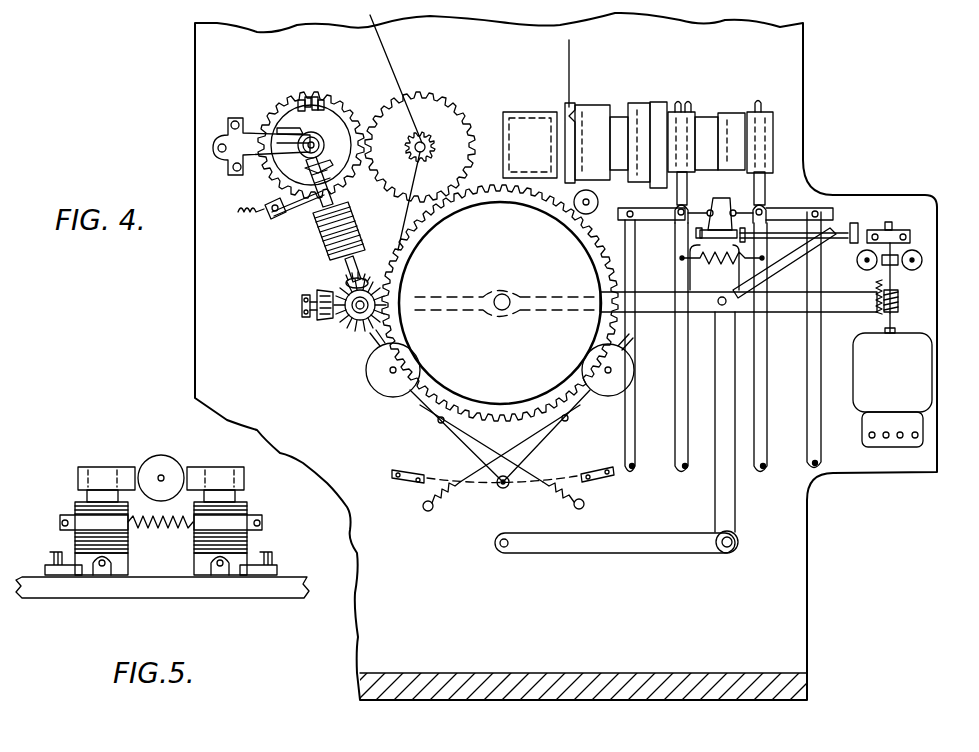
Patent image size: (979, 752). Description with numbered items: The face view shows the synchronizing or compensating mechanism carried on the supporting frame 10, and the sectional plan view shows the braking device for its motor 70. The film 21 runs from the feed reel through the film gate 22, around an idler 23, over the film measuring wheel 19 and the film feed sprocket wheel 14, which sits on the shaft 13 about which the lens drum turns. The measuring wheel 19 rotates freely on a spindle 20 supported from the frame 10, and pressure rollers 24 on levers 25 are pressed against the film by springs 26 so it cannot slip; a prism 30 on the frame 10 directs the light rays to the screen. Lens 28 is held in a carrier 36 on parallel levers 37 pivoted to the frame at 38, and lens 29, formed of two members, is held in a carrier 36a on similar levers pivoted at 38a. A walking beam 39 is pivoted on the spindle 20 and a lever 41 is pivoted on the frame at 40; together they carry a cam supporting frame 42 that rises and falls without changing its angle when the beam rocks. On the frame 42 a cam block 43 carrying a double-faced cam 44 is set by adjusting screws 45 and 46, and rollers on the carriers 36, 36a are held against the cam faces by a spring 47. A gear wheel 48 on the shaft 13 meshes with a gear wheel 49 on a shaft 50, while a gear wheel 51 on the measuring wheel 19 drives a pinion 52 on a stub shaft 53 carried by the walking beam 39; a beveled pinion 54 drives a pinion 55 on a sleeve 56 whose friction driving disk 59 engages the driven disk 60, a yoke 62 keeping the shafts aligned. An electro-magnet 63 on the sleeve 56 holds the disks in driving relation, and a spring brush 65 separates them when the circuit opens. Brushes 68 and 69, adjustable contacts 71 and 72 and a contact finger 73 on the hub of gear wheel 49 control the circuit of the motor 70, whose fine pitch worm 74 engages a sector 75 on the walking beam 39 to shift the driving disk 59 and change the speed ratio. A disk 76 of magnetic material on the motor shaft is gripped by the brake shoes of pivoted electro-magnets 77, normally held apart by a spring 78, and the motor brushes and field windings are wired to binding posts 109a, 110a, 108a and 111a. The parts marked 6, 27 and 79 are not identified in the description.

In FIG. 4, the indicator assembly 6 is at (272, 115).
In FIG. 4, the supporting frame 10 is at (806, 95).
In FIG. 5, the supporting frame 10 is at (250, 598).
In FIG. 4, the shaft 13 is at (415, 147).
In FIG. 4, the film feed sprocket wheel 14 is at (427, 134).
In FIG. 4, the film measuring wheel 19 is at (480, 196).
In FIG. 4, the spindle 20 is at (507, 297).
In FIG. 4, the film 21 is at (572, 80).
In FIG. 4, the film gate 22 is at (565, 107).
In FIG. 4, the idler 23 is at (598, 202).
In FIG. 4, the pressure rollers 24 is at (393, 392).
In FIG. 4, the levers 25 is at (425, 410).
In FIG. 4, the springs 26 is at (455, 490).
In FIG. 4, the stop blocks 27 is at (410, 470).
In FIG. 4, the lens 28 is at (759, 100).
In FIG. 4, the lens 29 is at (682, 100).
In FIG. 4, the prism 30 is at (530, 145).
In FIG. 4, the lens carrier 36 is at (767, 190).
In FIG. 4, the lens carrier 36a is at (697, 113).
In FIG. 4, the parallel levers 37 is at (627, 286).
In FIG. 4, the pivot 38 is at (770, 466).
In FIG. 4, the pivot 38a is at (636, 467).
In FIG. 4, the walking beam 39 is at (787, 313).
In FIG. 4, the pivot 40 is at (502, 548).
In FIG. 4, the lever 41 is at (625, 553).
In FIG. 4, the cam supporting frame 42 is at (800, 247).
In FIG. 4, the cam block 43 is at (700, 237).
In FIG. 4, the double-faced cam 44 is at (722, 198).
In FIG. 4, the adjusting screw 45 is at (696, 232).
In FIG. 4, the adjusting screw 46 is at (760, 232).
In FIG. 4, the spring 47 is at (708, 262).
In FIG. 4, the gear wheel 48 is at (432, 82).
In FIG. 4, the gear wheel 49 is at (310, 97).
In FIG. 4, the shaft 50 is at (323, 145).
In FIG. 4, the gear wheel 51 is at (490, 416).
In FIG. 4, the pinion 52 is at (330, 322).
In FIG. 4, the stub shaft 53 is at (385, 312).
In FIG. 4, the beveled pinion 54 is at (381, 284).
In FIG. 4, the pinion 55 is at (346, 280).
In FIG. 4, the sleeve 56 is at (335, 198).
In FIG. 4, the friction driving disk 59 is at (300, 177).
In FIG. 4, the driven disk 60 is at (332, 113).
In FIG. 4, the yoke 62 is at (328, 162).
In FIG. 4, the electro-magnet 63 is at (362, 229).
In FIG. 4, the spring brush 65 is at (296, 208).
In FIG. 4, the brush 68 is at (283, 118).
In FIG. 4, the brush 69 is at (297, 137).
In FIG. 4, the motor 70 is at (892, 380).
In FIG. 4, the adjustable contact 71 is at (322, 102).
In FIG. 4, the adjustable contact 72 is at (300, 100).
In FIG. 4, the contact finger 73 is at (317, 98).
In FIG. 4, the fine pitch worm 74 is at (900, 306).
In FIG. 4, the sector 75 is at (900, 288).
In FIG. 4, the disk 76 is at (896, 256).
In FIG. 5, the disk 76 is at (164, 450).
In FIG. 4, the electro-magnets 77 is at (923, 260).
In FIG. 5, the electro-magnets 77 is at (75, 505).
In FIG. 5, the spring 78 is at (160, 528).
In FIG. 5, the clamp 79 is at (52, 553).
In FIG. 4, the binding post 108a is at (886, 440).
In FIG. 4, the binding post 109a is at (872, 440).
In FIG. 4, the binding post 110a is at (918, 435).
In FIG. 4, the binding post 111a is at (900, 440).